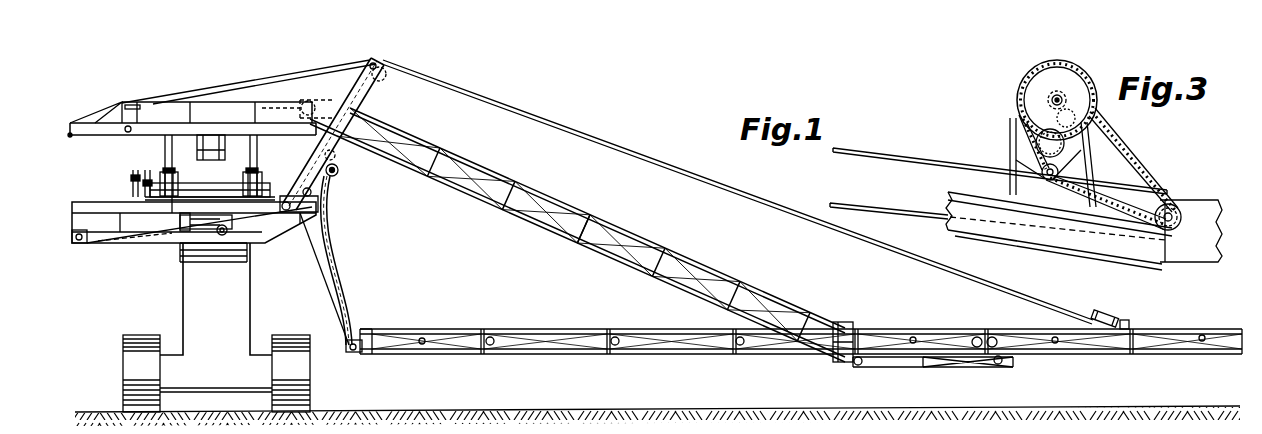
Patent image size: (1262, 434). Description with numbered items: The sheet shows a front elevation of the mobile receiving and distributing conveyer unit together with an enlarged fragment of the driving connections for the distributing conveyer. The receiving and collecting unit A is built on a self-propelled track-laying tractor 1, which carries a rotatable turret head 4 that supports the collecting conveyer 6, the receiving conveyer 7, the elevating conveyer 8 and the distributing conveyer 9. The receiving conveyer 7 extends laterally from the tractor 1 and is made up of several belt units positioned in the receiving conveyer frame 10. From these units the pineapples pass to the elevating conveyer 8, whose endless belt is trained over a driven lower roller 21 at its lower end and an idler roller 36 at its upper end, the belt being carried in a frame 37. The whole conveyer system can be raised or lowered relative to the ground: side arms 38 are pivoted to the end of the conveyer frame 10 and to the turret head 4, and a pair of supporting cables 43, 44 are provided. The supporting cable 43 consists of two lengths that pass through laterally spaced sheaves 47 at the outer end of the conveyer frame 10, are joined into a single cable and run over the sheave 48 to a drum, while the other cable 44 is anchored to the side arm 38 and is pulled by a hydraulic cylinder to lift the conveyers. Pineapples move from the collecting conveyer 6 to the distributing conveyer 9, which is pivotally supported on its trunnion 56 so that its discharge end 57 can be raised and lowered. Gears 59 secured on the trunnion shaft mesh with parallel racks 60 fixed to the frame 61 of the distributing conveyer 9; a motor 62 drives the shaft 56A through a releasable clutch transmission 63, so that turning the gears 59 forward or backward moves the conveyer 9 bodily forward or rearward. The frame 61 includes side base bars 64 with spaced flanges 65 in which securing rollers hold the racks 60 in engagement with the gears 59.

In FIG. 1, the tractor 1 is at (250, 305).
In FIG. 1, the turret head 4 is at (112, 243).
In FIG. 1, the collecting conveyer 6 is at (268, 118).
In FIG. 1, the receiving conveyer 7 is at (552, 327).
In FIG. 1, the elevating conveyer 8 is at (679, 254).
In FIG. 3, the distributing conveyer 9 is at (947, 160).
In FIG. 1, the receiving conveyer frame 10 is at (675, 356).
In FIG. 1, the lower roller 21 is at (853, 367).
In FIG. 1, the idler roller 36 is at (306, 102).
In FIG. 1, the frame 37 is at (611, 222).
In FIG. 1, the side arms 38 is at (333, 272).
In FIG. 1, the supporting cable 43 is at (737, 192).
In FIG. 1, the supporting cable 44 is at (350, 238).
In FIG. 1, the sheaves 47 is at (1118, 312).
In FIG. 1, the sheave 48 is at (380, 92).
In FIG. 1, the trunnion 56 is at (172, 200).
In FIG. 1, the shaft 56A is at (212, 192).
In FIG. 3, the discharge end 57 is at (1194, 207).
In FIG. 1, the gears 59 is at (258, 200).
In FIG. 1, the racks 60 is at (180, 188).
In FIG. 1, the frame 61 is at (168, 150).
In FIG. 3, the frame 61 is at (1056, 236).
In FIG. 1, the motor 62 is at (130, 188).
In FIG. 1, the releasable clutch transmission 63 is at (160, 200).
In FIG. 3, the side base bars 64 is at (1107, 248).
In FIG. 3, the flanges 65 is at (958, 196).
In FIG. 1, the receiving and collecting unit A is at (432, 320).